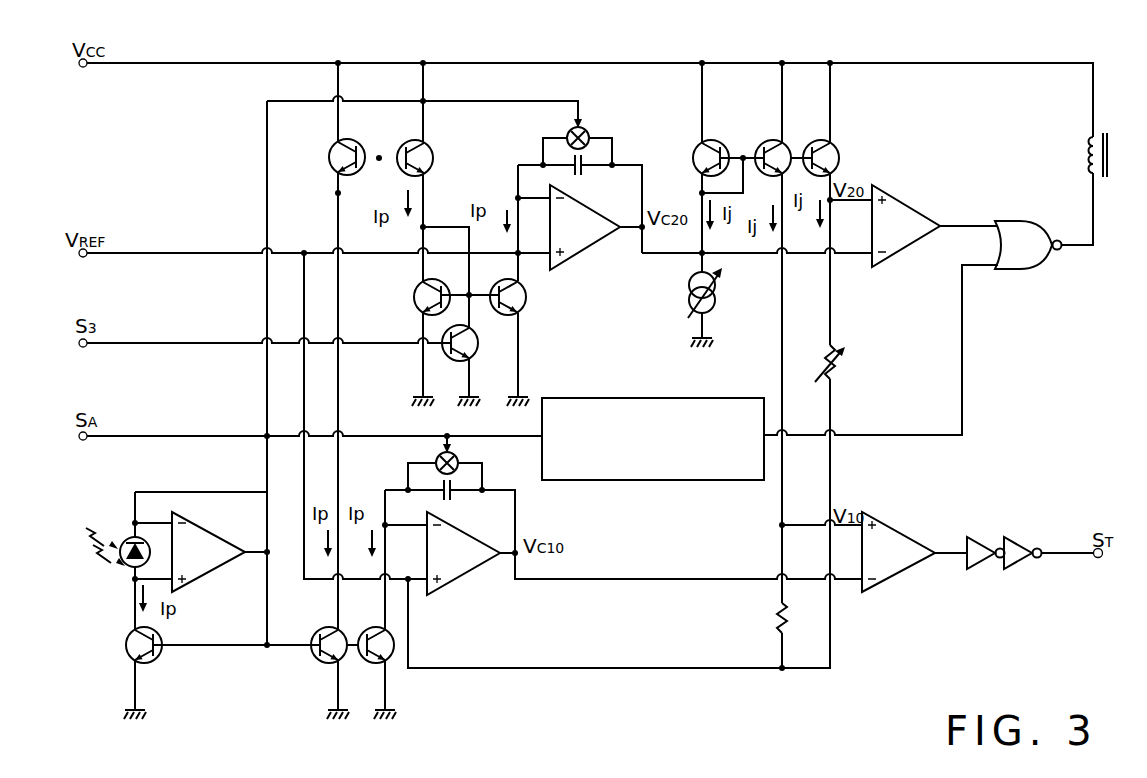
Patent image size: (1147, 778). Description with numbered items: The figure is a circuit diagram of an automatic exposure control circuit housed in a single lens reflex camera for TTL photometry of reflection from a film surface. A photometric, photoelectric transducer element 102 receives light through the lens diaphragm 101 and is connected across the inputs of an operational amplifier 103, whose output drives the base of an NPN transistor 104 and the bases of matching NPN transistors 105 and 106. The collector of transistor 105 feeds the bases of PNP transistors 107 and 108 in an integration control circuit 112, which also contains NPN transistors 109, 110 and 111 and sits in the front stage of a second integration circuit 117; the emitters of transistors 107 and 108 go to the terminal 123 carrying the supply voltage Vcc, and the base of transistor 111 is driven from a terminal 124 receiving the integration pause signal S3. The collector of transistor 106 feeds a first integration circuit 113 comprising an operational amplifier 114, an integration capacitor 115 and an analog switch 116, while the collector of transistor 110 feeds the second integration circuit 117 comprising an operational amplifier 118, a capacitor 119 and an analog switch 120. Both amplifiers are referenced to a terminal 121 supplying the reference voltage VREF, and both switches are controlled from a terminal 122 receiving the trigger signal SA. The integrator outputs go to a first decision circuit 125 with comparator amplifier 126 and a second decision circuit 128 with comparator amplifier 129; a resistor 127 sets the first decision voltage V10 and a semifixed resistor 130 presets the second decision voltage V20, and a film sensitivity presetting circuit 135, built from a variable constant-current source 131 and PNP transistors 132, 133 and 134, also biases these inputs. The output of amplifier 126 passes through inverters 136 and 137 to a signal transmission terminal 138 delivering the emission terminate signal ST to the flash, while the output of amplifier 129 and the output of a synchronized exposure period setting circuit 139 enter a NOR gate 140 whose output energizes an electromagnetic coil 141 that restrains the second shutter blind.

The lens diaphragm 101 is at (107, 533).
The photometric photoelectric transducer element 102 is at (130, 568).
The operational amplifier 103 is at (212, 541).
The NPN transistor 104 is at (156, 662).
The NPN transistor 105 is at (328, 626).
The NPN transistor 106 is at (395, 647).
The PNP transistor 107 is at (330, 154).
The PNP transistor 108 is at (411, 142).
The NPN transistor 109 is at (414, 302).
The NPN transistor 110 is at (526, 299).
The NPN transistor 111 is at (478, 348).
The integration control circuit 112 is at (452, 151).
The first integration circuit 113 is at (543, 505).
The operational amplifier 114 is at (470, 565).
The capacitor 115 is at (450, 500).
The analog switch 116 is at (456, 458).
The second integration circuit 117 is at (646, 113).
The operational amplifier 118 is at (578, 241).
The capacitor 119 is at (582, 176).
The analog switch 120 is at (586, 134).
The terminal 121 is at (80, 257).
The terminal 122 is at (80, 440).
The terminal 123 is at (79, 66).
The terminal 124 is at (80, 347).
The first decision circuit 125 is at (883, 486).
The operational amplifier 126 is at (910, 544).
The resistor 127 is at (780, 626).
The second decision circuit 128 is at (885, 170).
The operational amplifier 129 is at (935, 219).
The semifixed resistor 130 is at (836, 368).
The variable constant-current source 131 is at (716, 300).
The PNP transistor 132 is at (693, 158).
The PNP transistor 133 is at (760, 140).
The PNP transistor 134 is at (808, 140).
The film sensitivity presetting circuit 135 is at (860, 110).
The inverter 136 is at (976, 566).
The inverter 137 is at (1016, 542).
The signal transmission terminal 138 is at (1100, 558).
The synchronized exposure period setting circuit 139 is at (710, 398).
The NOR gate 140 is at (1038, 234).
The electromagnetic coil 141 is at (1087, 143).